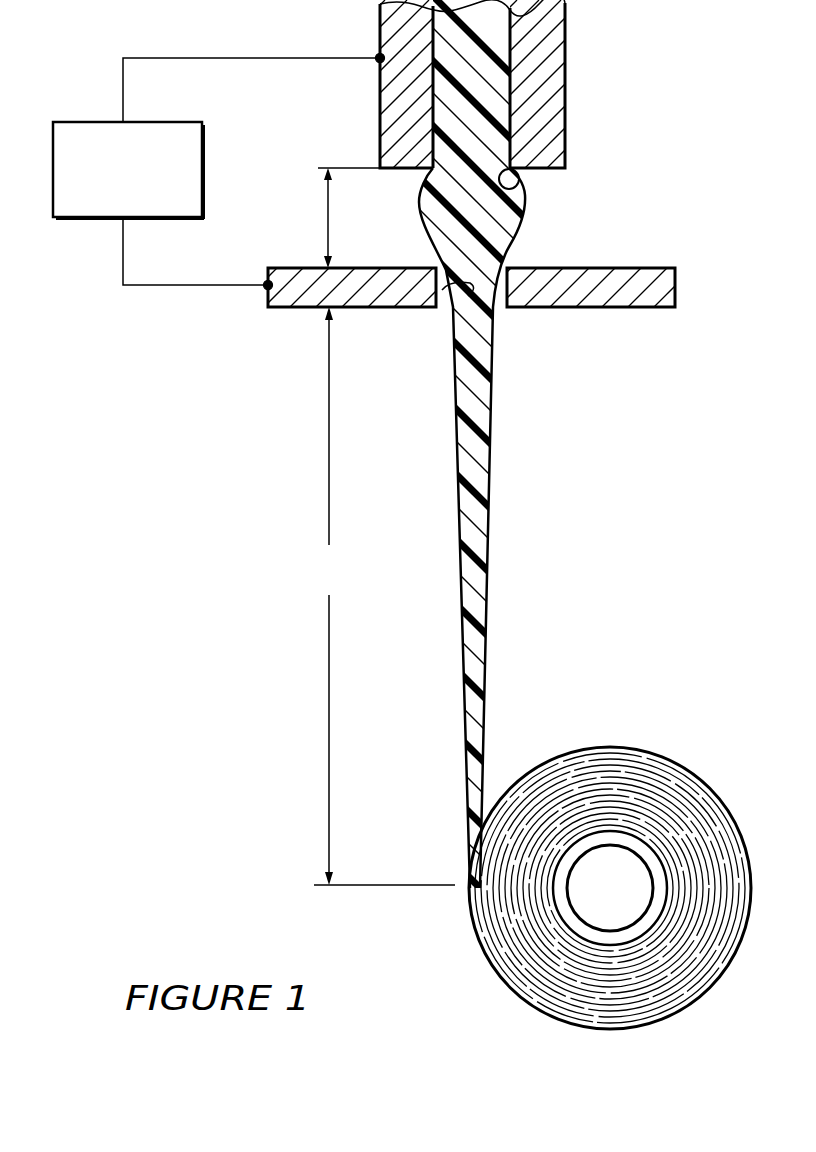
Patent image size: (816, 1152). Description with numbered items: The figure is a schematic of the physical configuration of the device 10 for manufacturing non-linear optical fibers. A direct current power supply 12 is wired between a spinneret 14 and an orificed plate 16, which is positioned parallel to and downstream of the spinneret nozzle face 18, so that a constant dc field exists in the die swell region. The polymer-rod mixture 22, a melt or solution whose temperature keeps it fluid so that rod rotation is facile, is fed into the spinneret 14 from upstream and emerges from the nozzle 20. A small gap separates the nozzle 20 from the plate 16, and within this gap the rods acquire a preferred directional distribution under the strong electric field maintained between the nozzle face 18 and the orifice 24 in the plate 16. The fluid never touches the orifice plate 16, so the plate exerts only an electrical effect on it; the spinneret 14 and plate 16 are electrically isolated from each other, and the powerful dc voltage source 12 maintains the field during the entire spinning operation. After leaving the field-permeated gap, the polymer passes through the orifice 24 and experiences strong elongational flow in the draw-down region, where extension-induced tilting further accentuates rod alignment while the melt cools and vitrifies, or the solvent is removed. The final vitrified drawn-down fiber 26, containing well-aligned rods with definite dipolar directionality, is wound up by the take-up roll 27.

The device 10 is at (402, 514).
The direct current power supply 12 is at (203, 172).
The spinneret 14 is at (567, 72).
The orificed plate 16 is at (664, 283).
The spinneret nozzle face 18 is at (403, 170).
The nozzle 20 is at (525, 199).
The polymer-rod mixture 22 is at (458, 78).
The orifice 24 is at (458, 308).
The fiber 26 is at (476, 528).
The take-up roll 27 is at (598, 900).